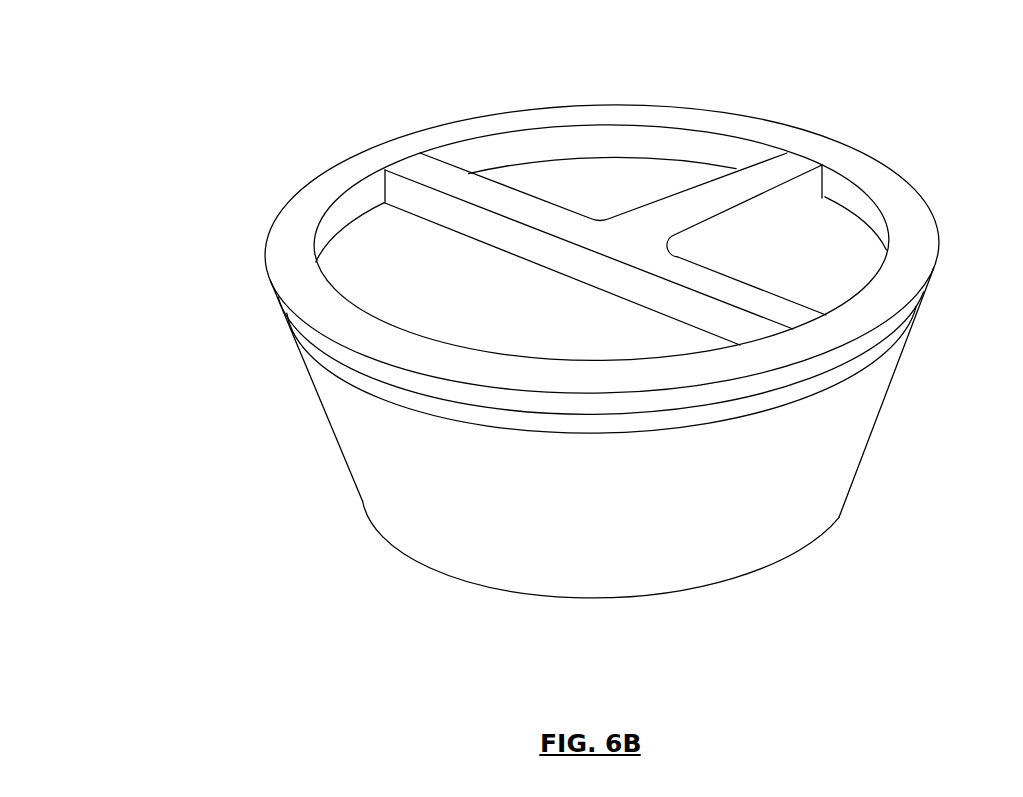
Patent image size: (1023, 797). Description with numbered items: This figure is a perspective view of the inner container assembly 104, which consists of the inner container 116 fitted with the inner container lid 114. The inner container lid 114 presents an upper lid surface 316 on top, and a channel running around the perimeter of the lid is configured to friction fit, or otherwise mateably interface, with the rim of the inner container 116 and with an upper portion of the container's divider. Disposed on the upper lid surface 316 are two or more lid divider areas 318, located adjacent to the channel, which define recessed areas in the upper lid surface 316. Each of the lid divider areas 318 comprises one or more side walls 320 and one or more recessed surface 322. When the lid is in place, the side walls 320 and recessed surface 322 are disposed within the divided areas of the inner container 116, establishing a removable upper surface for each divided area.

The inner container assembly 104 is at (544, 313).
The inner container lid 114 is at (884, 144).
The inner container 116 is at (333, 472).
The upper lid surface 316 is at (672, 101).
The lid divider areas 318 is at (523, 176).
The side walls 320 is at (789, 198).
The recessed surface 322 is at (854, 253).